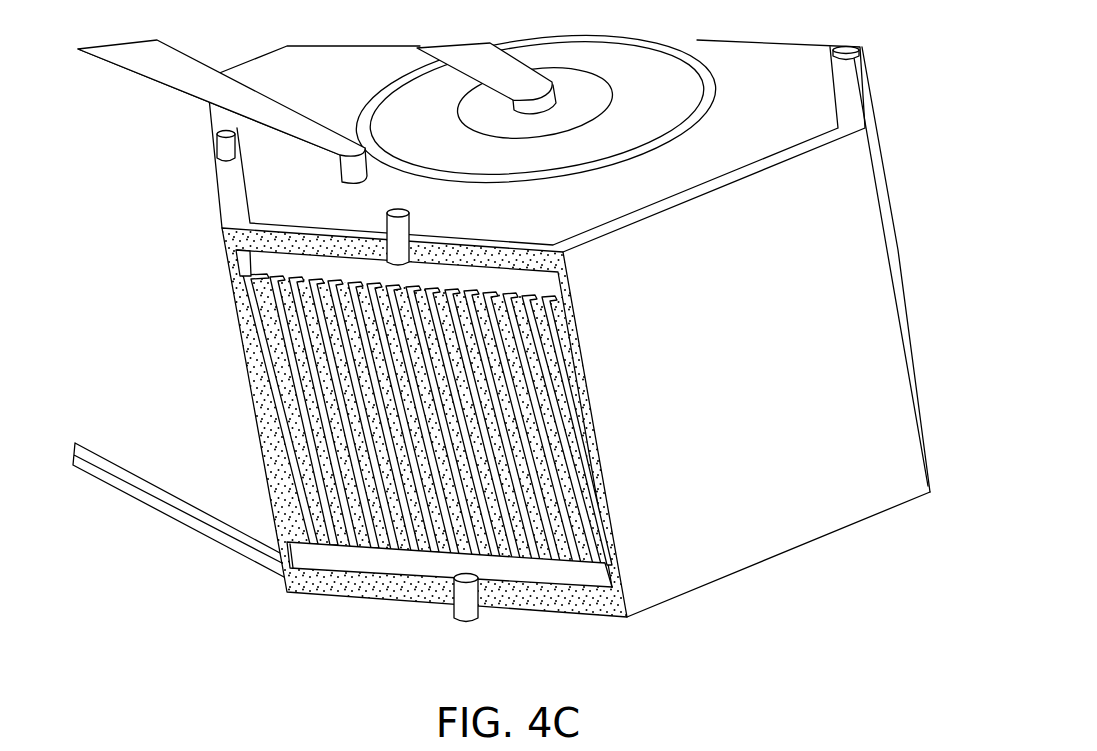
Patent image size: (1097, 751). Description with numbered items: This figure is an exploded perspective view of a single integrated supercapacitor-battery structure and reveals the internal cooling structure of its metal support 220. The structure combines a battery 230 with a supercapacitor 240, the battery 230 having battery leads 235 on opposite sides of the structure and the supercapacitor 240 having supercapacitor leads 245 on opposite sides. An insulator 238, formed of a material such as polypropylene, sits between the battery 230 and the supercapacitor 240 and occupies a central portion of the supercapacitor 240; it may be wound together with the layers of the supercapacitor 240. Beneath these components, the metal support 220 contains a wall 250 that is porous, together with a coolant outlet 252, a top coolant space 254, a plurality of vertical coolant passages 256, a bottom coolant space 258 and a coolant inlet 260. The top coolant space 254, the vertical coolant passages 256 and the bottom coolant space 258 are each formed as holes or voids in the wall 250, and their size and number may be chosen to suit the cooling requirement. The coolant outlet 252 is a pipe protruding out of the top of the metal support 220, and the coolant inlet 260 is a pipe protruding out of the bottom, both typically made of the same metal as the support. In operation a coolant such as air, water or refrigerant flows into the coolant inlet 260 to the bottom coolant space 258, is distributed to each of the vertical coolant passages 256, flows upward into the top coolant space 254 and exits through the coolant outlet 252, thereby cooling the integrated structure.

The metal support 220 is at (778, 500).
The battery 230 is at (775, 118).
The battery leads 235 is at (138, 70).
The insulator 238 is at (690, 37).
The supercapacitor 240 is at (628, 118).
The supercapacitor leads 245 is at (483, 63).
The wall 250 is at (257, 333).
The coolant outlet 252 is at (844, 50).
The top coolant space 254 is at (255, 261).
The vertical coolant passages 256 is at (285, 395).
The bottom coolant space 258 is at (327, 557).
The coolant inlet 260 is at (468, 625).